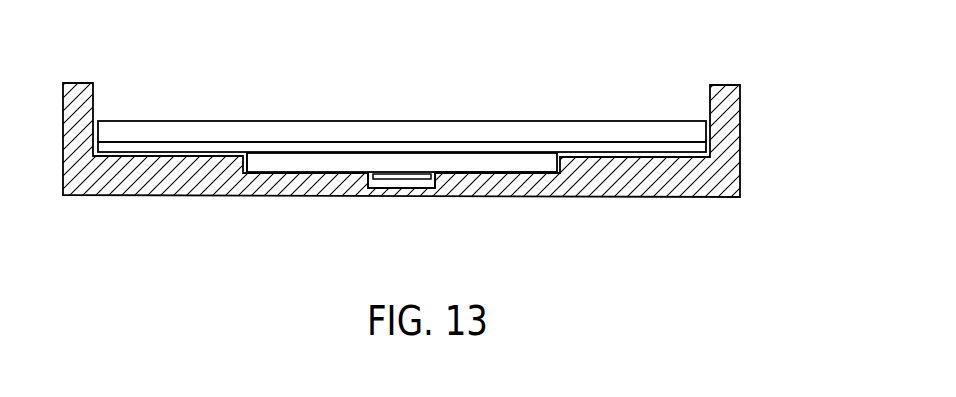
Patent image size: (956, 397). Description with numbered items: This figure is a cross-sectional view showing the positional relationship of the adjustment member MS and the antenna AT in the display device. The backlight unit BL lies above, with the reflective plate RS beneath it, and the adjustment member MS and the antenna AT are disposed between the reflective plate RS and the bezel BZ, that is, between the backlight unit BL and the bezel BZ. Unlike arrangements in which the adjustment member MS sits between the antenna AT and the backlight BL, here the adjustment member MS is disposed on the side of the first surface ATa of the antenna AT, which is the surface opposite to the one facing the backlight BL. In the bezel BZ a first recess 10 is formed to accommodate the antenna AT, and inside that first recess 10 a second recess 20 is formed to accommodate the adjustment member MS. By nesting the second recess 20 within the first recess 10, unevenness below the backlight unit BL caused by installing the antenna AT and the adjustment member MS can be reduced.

The bezel BZ is at (735, 163).
The backlight unit BL is at (131, 116).
The reflective plate RS is at (663, 148).
The antenna AT is at (495, 162).
The first surface ATa is at (543, 175).
The first recess 10 is at (251, 159).
The adjustment member MS is at (409, 184).
The second recess 20 is at (378, 178).